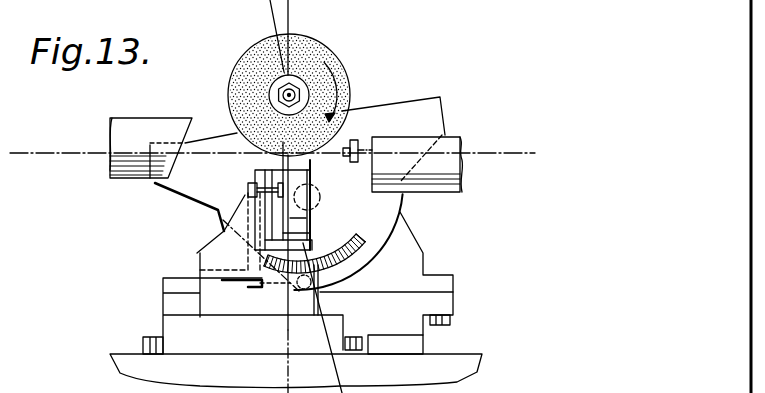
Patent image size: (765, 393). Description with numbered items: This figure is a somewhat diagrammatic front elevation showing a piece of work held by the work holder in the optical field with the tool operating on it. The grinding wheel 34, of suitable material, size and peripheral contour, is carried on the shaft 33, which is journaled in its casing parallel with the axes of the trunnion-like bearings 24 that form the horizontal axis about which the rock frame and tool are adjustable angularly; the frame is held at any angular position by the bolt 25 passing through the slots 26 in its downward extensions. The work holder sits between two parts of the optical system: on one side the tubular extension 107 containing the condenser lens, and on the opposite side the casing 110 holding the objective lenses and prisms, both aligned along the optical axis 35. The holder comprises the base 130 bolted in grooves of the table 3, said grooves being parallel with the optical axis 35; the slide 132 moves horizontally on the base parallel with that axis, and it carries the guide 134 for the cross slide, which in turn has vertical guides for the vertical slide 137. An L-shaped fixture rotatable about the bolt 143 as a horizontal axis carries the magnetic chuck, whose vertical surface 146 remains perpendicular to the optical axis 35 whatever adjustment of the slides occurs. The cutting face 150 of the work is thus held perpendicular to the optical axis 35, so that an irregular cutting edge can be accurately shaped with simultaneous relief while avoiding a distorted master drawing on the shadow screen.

The shaft 33 is at (254, 45).
The grinding wheel 34 is at (327, 62).
The optical axis 35 is at (348, 127).
The tubular extension 107 is at (147, 128).
The casing 110 is at (418, 126).
The cutting face 150 is at (312, 180).
The vertical slide 137 is at (264, 170).
The bolt 143 is at (247, 191).
The trunnion-like bearings 24 is at (320, 198).
The vertical surface 146 is at (300, 222).
The bolt 25 is at (308, 257).
The slots 26 is at (362, 265).
The base 130 is at (342, 327).
The slide 132 is at (303, 300).
The guide 134 is at (248, 287).
The table 3 is at (472, 355).